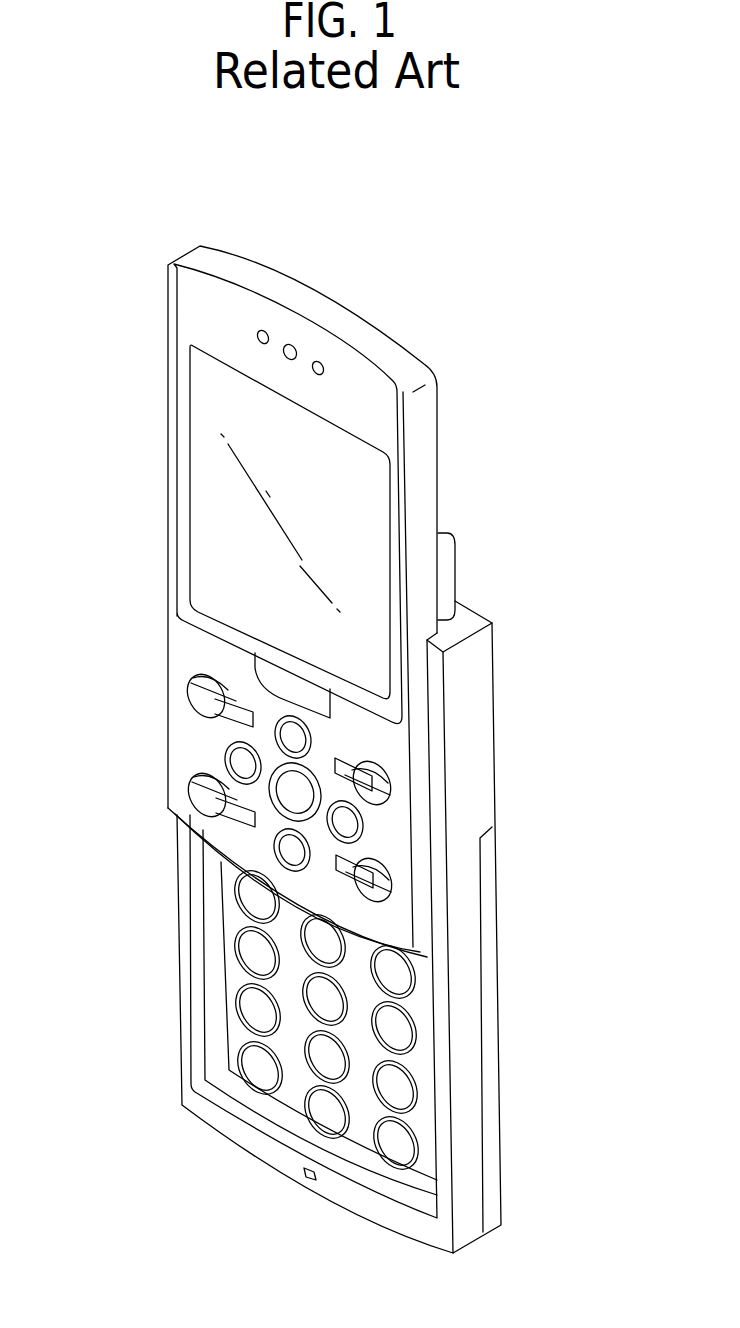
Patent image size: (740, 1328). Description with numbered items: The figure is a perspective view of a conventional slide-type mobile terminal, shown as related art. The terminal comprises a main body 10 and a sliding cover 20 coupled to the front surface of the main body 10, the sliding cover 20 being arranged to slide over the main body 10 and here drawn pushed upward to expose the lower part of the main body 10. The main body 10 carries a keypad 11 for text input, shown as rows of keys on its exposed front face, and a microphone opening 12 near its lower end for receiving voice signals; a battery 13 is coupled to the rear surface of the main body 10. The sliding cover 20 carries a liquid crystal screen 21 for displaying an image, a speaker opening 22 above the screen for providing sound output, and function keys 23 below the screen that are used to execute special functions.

The main body 10 is at (512, 703).
The keypad 11 is at (233, 972).
The microphone opening 12 is at (306, 1178).
The battery 13 is at (487, 912).
The sliding cover 20 is at (152, 368).
The liquid crystal screen 21 is at (200, 485).
The speaker opening 22 is at (291, 347).
The function keys 23 is at (162, 653).